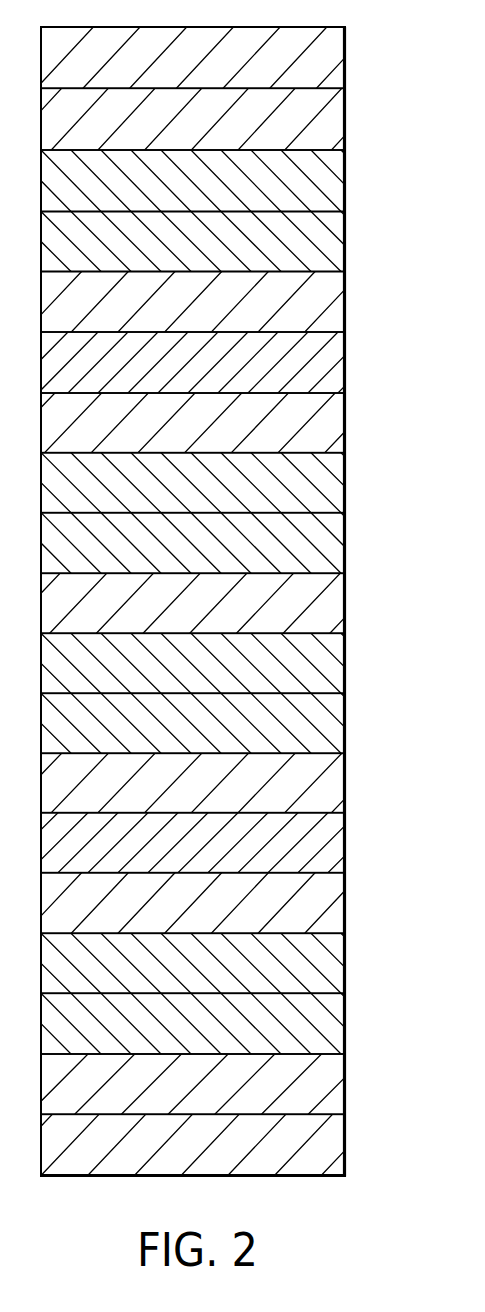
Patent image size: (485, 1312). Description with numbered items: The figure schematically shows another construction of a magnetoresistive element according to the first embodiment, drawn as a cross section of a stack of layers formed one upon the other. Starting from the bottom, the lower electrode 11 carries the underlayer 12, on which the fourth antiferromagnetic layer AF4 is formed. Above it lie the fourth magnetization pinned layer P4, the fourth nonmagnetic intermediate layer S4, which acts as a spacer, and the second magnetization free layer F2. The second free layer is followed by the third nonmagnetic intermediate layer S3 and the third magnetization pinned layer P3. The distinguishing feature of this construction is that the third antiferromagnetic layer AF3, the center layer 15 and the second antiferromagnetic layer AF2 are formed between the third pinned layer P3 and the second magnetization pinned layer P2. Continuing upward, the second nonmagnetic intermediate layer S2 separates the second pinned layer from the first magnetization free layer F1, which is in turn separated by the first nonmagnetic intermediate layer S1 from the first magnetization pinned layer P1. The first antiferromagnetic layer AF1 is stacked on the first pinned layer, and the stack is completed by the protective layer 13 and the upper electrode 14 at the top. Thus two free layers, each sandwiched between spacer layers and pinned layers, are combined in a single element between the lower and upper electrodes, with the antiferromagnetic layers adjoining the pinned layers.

The upper electrode 14 is at (345, 48).
The protective layer 13 is at (345, 109).
The first antiferromagnetic layer AF1 is at (345, 171).
The first magnetization pinned layer P1 is at (345, 232).
The first nonmagnetic intermediate layer S1 is at (345, 292).
The first magnetization free layer F1 is at (345, 352).
The second nonmagnetic intermediate layer S2 is at (345, 413).
The second magnetization pinned layer P2 is at (345, 473).
The second antiferromagnetic layer AF2 is at (345, 533).
The center layer 15 is at (345, 593).
The third antiferromagnetic layer AF3 is at (345, 653).
The third magnetization pinned layer P3 is at (345, 713).
The third nonmagnetic intermediate layer S3 is at (345, 773).
The second magnetization free layer F2 is at (345, 833).
The fourth nonmagnetic intermediate layer S4 is at (345, 893).
The fourth magnetization pinned layer P4 is at (345, 953).
The fourth antiferromagnetic layer AF4 is at (345, 1014).
The underlayer 12 is at (345, 1074).
The lower electrode 11 is at (345, 1135).